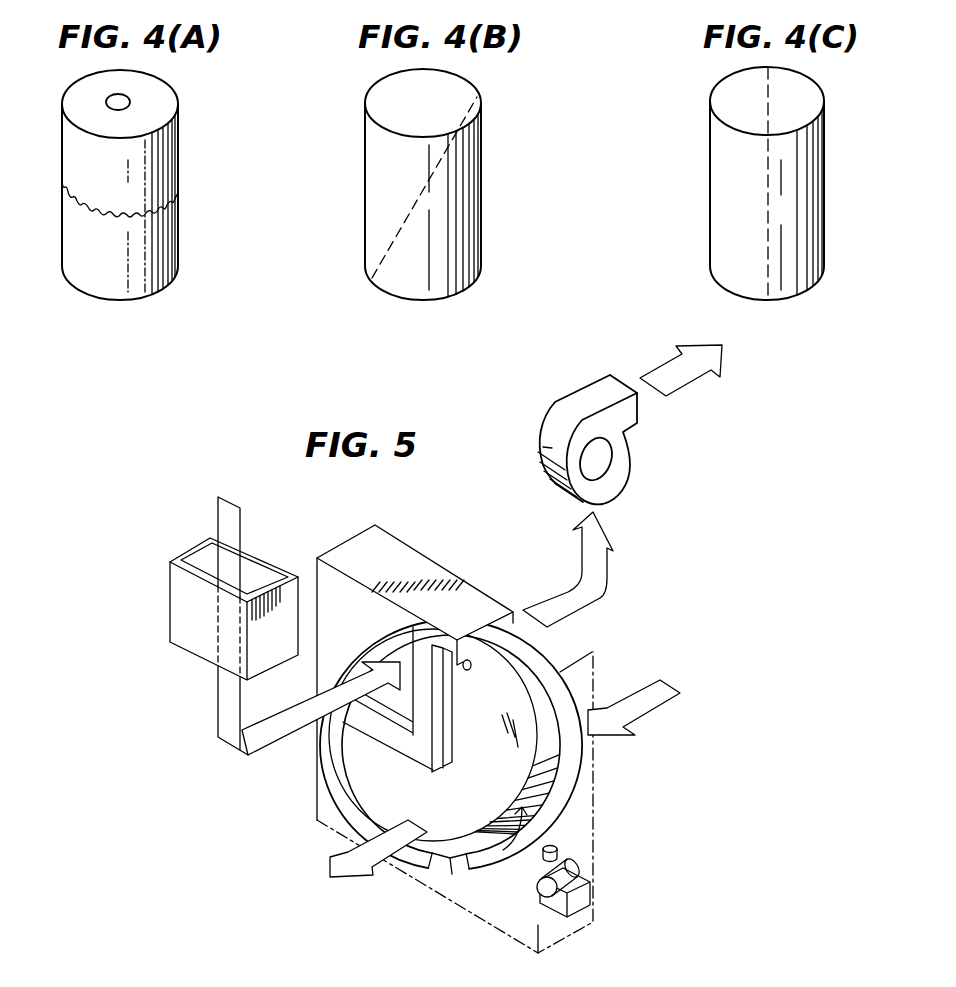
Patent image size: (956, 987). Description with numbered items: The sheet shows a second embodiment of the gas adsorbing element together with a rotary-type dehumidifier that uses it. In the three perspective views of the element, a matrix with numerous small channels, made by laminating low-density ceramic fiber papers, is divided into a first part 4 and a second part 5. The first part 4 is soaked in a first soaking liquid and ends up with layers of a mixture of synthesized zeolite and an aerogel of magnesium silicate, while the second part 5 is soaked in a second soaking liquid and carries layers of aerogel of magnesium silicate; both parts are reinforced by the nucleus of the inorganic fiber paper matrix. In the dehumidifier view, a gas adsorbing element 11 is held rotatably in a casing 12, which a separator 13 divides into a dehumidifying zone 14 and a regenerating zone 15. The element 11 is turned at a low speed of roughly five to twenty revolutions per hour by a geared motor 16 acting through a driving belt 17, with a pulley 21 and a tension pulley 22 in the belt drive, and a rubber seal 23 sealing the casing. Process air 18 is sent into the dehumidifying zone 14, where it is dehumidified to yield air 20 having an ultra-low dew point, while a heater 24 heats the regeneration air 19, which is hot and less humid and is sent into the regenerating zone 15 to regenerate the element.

In FIG. 4A, the first part 4 is at (72, 168).
In FIG. 4B, the first part 4 is at (372, 169).
In FIG. 4C, the first part 4 is at (716, 169).
In FIG. 4A, the second part 5 is at (170, 197).
In FIG. 4B, the second part 5 is at (472, 173).
In FIG. 4C, the second part 5 is at (818, 173).
In FIG. 5, the gas adsorbing element 11 is at (560, 673).
In FIG. 5, the casing 12 is at (433, 570).
In FIG. 5, the separator 13 is at (383, 725).
In FIG. 5, the dehumidifying zone 14 is at (477, 867).
In FIG. 5, the regenerating zone 15 is at (377, 635).
In FIG. 5, the geared motor 16 is at (592, 893).
In FIG. 5, the driving belt 17 is at (577, 790).
In FIG. 5, the process air 18 is at (664, 696).
In FIG. 5, the regeneration air 19 is at (225, 713).
In FIG. 5, the air having an ultra-low dew point 20 is at (332, 853).
In FIG. 5, the pulley 21 is at (557, 907).
In FIG. 5, the tension pulley 22 is at (557, 846).
In FIG. 5, the rubber seal 23 is at (440, 863).
In FIG. 5, the heater 24 is at (167, 580).